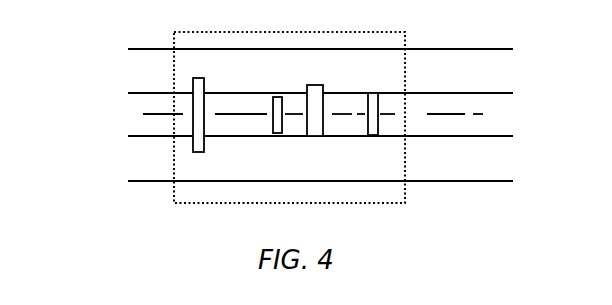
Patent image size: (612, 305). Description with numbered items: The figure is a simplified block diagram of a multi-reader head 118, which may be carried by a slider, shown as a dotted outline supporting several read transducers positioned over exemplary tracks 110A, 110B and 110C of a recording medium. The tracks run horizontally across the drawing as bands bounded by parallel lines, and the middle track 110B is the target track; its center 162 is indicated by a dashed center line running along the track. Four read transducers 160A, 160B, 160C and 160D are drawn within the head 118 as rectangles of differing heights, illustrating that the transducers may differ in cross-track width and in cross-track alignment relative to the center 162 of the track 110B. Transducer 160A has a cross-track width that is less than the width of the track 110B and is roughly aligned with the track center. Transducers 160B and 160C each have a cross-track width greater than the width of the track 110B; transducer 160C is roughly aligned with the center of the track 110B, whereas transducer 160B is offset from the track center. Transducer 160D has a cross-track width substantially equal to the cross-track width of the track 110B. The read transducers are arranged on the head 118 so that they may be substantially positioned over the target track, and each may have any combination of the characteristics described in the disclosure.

The track 110A is at (123, 49).
The track 110B is at (123, 93).
The track 110C is at (123, 136).
The head 118 is at (380, 32).
The read transducer 160A is at (278, 96).
The read transducer 160B is at (317, 133).
The read transducer 160C is at (200, 151).
The read transducer 160D is at (371, 99).
The center 162 is at (457, 115).